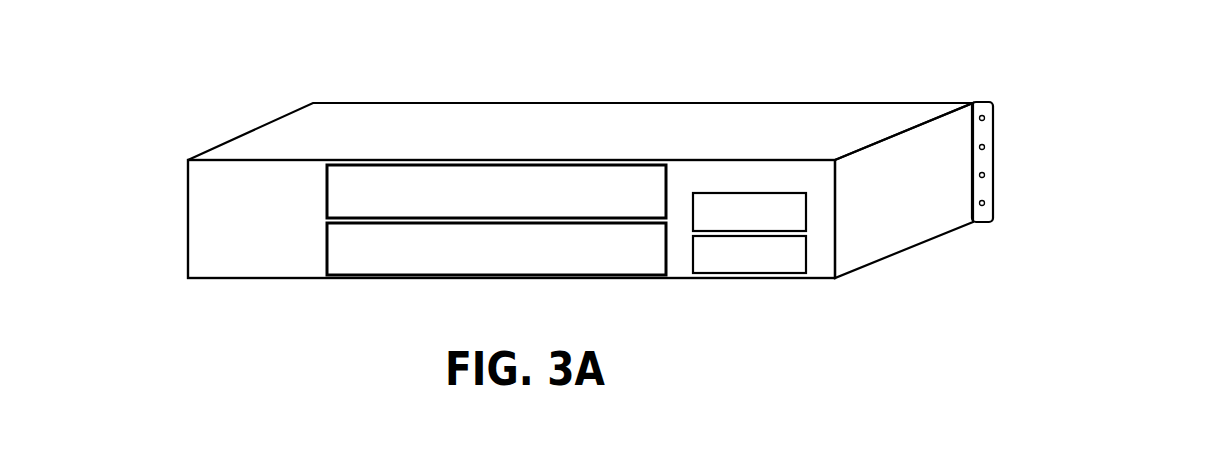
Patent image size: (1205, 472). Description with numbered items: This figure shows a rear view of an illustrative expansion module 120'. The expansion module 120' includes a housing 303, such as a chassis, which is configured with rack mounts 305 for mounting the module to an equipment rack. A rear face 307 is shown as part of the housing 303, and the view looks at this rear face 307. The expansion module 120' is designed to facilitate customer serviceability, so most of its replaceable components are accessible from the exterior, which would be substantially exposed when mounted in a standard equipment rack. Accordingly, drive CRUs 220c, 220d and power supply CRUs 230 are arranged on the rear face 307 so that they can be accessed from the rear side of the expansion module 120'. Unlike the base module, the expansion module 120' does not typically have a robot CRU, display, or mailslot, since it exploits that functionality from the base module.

The expansion module 120' is at (635, 182).
The housing 303 is at (289, 118).
The rear face 307 is at (267, 263).
The drive CRU 220c is at (580, 202).
The drive CRU 220d is at (580, 257).
The power supply CRU 230 is at (807, 254).
The rack mounts 305 is at (1045, 173).